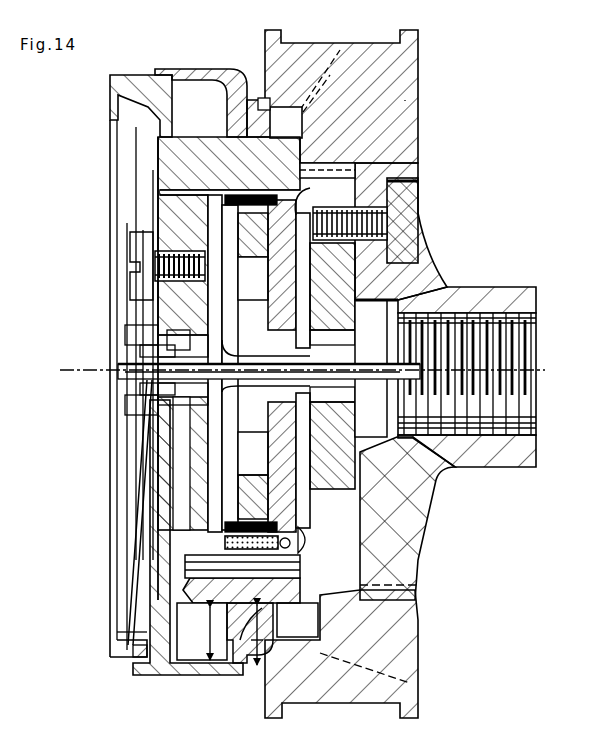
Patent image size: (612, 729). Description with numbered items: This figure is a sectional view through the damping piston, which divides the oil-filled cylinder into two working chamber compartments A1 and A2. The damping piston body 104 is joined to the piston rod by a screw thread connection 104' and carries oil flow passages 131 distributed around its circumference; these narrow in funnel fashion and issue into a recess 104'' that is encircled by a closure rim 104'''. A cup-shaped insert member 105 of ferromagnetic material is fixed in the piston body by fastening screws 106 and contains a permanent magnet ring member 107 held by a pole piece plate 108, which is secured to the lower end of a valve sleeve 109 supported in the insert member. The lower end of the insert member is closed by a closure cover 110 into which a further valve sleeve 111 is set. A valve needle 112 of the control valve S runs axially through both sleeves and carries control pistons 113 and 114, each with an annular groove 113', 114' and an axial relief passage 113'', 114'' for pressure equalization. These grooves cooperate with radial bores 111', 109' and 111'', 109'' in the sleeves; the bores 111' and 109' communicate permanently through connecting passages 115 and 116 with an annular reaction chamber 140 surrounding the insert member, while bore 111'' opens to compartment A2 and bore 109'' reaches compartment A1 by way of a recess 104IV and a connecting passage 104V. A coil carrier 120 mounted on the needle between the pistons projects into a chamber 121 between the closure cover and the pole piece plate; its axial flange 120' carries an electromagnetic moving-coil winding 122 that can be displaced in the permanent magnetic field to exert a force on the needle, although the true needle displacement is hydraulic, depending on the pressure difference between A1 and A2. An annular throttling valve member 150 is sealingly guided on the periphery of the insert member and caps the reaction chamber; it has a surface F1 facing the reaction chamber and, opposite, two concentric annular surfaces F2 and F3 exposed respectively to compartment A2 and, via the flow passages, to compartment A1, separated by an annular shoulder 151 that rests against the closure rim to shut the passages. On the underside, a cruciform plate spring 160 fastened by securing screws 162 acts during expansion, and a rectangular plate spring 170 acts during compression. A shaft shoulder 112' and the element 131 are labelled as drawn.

The damping piston body 104 is at (358, 374).
The screw thread connection 104' is at (542, 317).
The recess in the piston body 104'' is at (328, 60).
The closure rim 104''' is at (300, 55).
The recess 104IV is at (393, 298).
The connecting passage 104V is at (440, 478).
The cup-shaped insert member 105 is at (352, 171).
The fastening screws 106 is at (420, 192).
The permanent magnet ring member 107 is at (290, 482).
The pole piece plate 108 is at (300, 556).
The valve sleeve 109 is at (467, 462).
The radial bore 109' is at (419, 518).
The radial bore 109'' is at (467, 288).
The closure cover 110 is at (175, 215).
The valve sleeve 111 is at (184, 363).
The radial bore 111' is at (98, 512).
The radial bore 111'' is at (107, 318).
The valve needle 112 is at (285, 366).
The shaft shoulder 112' is at (133, 370).
The control piston 113 is at (175, 366).
The annular groove 113' is at (122, 408).
The relief passage 113'' is at (102, 381).
The control piston 114 is at (490, 374).
The annular groove 114' is at (288, 122).
The relief passage 114'' is at (505, 365).
The connecting passage 115 is at (178, 528).
The connecting passage 116 is at (302, 488).
The coil carrier 120 is at (146, 401).
The axially extending flange 120' is at (375, 588).
The chamber 121 is at (195, 205).
The electromagnetic moving-coil winding 122 is at (183, 548).
The oil flow passages 131 is at (405, 100).
The annular reaction chamber 140 is at (187, 85).
The annular throttling valve member 150 is at (222, 67).
The annular shoulder 151 is at (265, 103).
The plate spring 160 is at (133, 650).
The securing screws 162 is at (140, 248).
The plate spring 170 is at (135, 600).
The control valve S is at (125, 354).
The working chamber compartment A1 is at (548, 259).
The working chamber compartment A2 is at (42, 243).
The active surface F1 is at (207, 655).
The annular surface F2 is at (254, 655).
The annular surface F3 is at (259, 645).